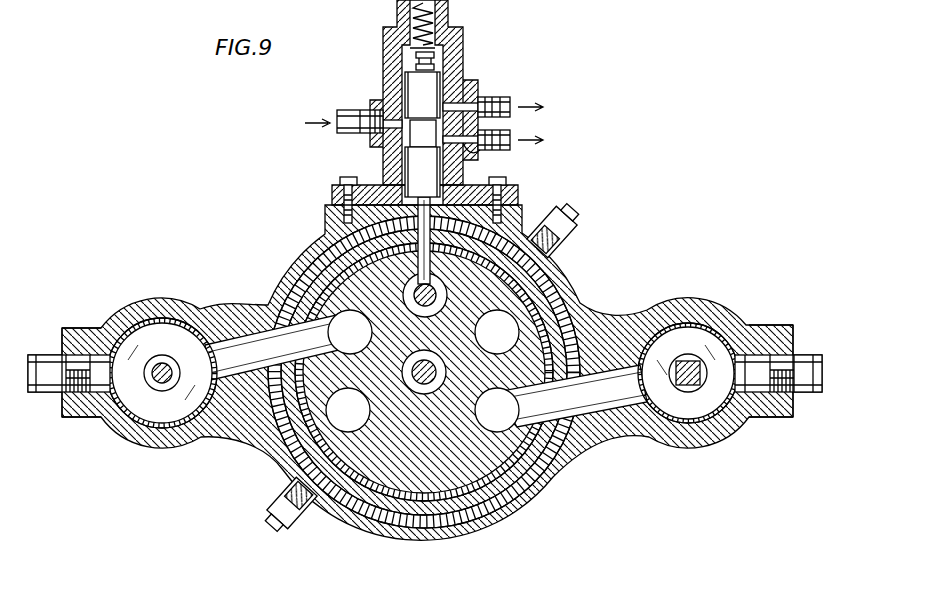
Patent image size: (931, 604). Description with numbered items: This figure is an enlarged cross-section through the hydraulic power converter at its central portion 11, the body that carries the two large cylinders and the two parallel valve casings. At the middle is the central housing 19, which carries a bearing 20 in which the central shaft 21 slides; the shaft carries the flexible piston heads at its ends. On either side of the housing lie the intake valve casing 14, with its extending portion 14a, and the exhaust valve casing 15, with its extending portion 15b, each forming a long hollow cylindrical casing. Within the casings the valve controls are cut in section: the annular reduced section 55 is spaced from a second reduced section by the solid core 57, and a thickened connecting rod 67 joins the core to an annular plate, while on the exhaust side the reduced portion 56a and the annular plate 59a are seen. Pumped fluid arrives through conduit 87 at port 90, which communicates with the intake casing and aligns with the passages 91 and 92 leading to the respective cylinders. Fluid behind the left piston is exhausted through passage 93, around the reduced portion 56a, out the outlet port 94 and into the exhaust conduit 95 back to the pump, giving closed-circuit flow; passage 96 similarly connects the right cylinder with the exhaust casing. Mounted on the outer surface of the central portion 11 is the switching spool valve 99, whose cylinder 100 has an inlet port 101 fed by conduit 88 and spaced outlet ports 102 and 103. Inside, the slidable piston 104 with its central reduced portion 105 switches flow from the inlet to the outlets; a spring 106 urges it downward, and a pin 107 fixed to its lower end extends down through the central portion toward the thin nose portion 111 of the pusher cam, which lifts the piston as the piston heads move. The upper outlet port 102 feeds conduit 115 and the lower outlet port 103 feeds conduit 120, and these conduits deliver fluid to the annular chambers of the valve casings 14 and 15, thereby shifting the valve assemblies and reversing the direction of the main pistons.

The central portion 11 is at (320, 250).
The valve casing 14 is at (162, 448).
The oppositely extending portion 14a is at (168, 318).
The valve casing 15 is at (690, 448).
The oppositely extending portion 15b is at (692, 322).
The central housing 19 is at (410, 480).
The bearing 20 is at (424, 394).
The central shaft 21 is at (438, 372).
The annular reduced section 55 is at (162, 373).
The reduced portion 56a is at (700, 415).
The solid core 57 is at (220, 353).
The annular plate 59a is at (640, 387).
The connecting rod 67 is at (172, 357).
The conduit 87 is at (45, 355).
The conduit 88 is at (348, 110).
The port 90 is at (104, 390).
The passage 91 is at (356, 419).
The passage 92 is at (350, 332).
The passage 93 is at (505, 419).
The outlet port 94 is at (752, 395).
The exhaust conduit 95 is at (800, 355).
The passage 96 is at (497, 332).
The switching spool valve 99 is at (439, 111).
The cylinder 100 is at (383, 62).
The inlet port 101 is at (378, 132).
The outlet port 102 is at (468, 96).
The outlet port 103 is at (477, 150).
The slidable piston 104 is at (430, 98).
The reduced portion 105 is at (431, 141).
The spring 106 is at (412, 22).
The pin 107 is at (416, 270).
The nose portion 111 is at (440, 293).
The conduit 115 is at (496, 98).
The conduit 120 is at (500, 132).